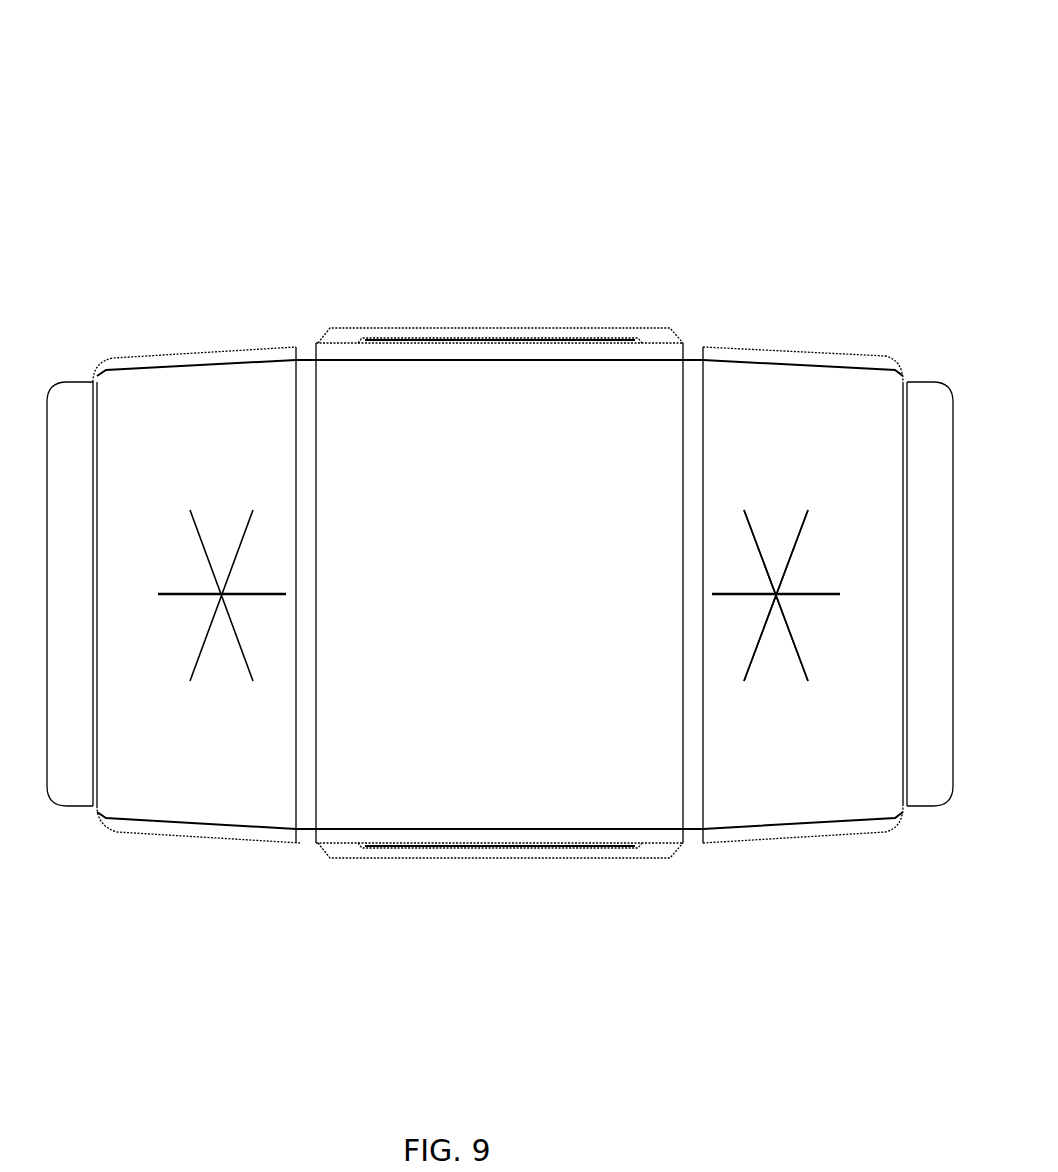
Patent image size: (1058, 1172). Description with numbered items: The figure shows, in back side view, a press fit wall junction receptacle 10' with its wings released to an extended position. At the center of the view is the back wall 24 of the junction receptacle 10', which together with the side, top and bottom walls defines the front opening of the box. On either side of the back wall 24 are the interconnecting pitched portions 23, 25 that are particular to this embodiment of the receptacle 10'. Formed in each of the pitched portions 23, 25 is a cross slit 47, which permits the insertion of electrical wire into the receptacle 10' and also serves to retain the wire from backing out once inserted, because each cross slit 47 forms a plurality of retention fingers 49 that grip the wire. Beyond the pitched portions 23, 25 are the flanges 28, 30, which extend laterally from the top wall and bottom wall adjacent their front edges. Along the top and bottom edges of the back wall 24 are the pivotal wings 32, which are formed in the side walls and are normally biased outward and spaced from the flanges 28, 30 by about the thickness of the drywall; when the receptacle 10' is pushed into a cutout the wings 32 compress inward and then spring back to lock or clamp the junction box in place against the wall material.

The junction receptacle 10' is at (248, 56).
The pitched portion 23 is at (752, 377).
The back wall 24 is at (380, 396).
The pitched portion 25 is at (162, 404).
The flange 28 is at (930, 594).
The flange 30 is at (70, 594).
The pivotal wing 32 is at (640, 328).
The cross slit 47 is at (748, 518).
The retention finger 49 is at (773, 545).